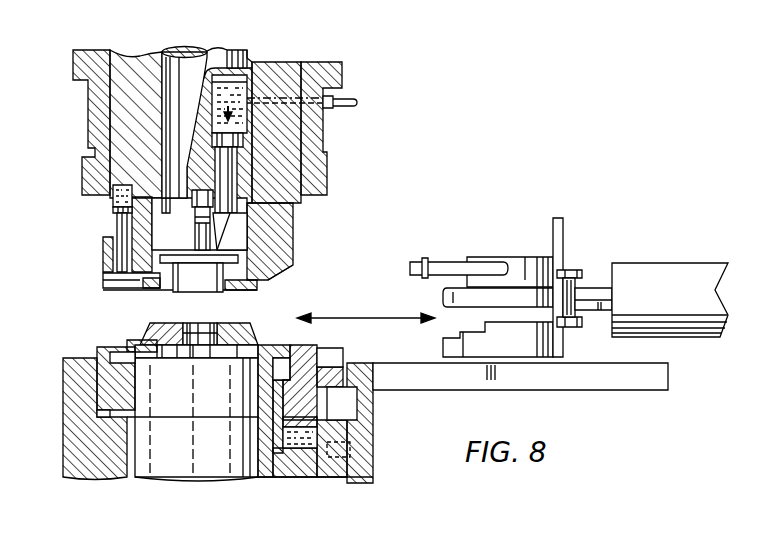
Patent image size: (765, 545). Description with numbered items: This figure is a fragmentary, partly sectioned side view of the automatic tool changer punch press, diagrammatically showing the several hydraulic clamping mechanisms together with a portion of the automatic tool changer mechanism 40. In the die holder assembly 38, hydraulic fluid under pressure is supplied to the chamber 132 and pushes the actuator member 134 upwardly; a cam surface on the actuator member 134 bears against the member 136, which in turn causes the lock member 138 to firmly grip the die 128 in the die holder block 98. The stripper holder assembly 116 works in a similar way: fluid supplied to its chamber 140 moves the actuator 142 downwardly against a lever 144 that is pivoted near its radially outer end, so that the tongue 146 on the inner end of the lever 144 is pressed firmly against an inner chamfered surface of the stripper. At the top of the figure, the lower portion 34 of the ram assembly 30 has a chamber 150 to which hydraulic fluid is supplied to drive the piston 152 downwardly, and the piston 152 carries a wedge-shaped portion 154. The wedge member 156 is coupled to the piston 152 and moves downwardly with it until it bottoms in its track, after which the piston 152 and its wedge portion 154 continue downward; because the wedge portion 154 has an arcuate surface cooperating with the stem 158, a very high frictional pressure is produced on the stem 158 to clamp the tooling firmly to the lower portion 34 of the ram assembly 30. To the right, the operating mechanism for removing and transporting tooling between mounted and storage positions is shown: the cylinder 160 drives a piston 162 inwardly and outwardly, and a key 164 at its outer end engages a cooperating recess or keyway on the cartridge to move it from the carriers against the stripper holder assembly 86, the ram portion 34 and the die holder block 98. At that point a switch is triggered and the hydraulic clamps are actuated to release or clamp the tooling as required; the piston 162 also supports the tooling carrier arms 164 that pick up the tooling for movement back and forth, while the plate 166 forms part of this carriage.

The ram assembly 30 is at (137, 45).
The lower portion of ram assembly 34 is at (213, 53).
The chamber 150 is at (257, 69).
The piston 152 is at (228, 172).
The stripper holder assembly 116 is at (92, 201).
The chamber 140 is at (112, 200).
The actuator 142 is at (113, 252).
The lever 144 is at (138, 273).
The tongue 146 is at (160, 289).
The stem 158 is at (194, 243).
The wedge-shaped portion 154 is at (222, 224).
The wedge member 156 is at (240, 238).
The stripper holder assembly 86 is at (264, 286).
The die 128 is at (229, 316).
The die holder assembly 38 is at (134, 483).
The die holder block 98 is at (127, 345).
The lock member 138 is at (263, 344).
The member 136 is at (293, 346).
The actuator member 134 is at (333, 362).
The chamber 132 is at (303, 440).
The automatic tool changer mechanism 40 is at (630, 246).
The plate 166 is at (553, 235).
The key 164 is at (578, 272).
The piston 162 is at (594, 311).
The cylinder 160 is at (677, 273).